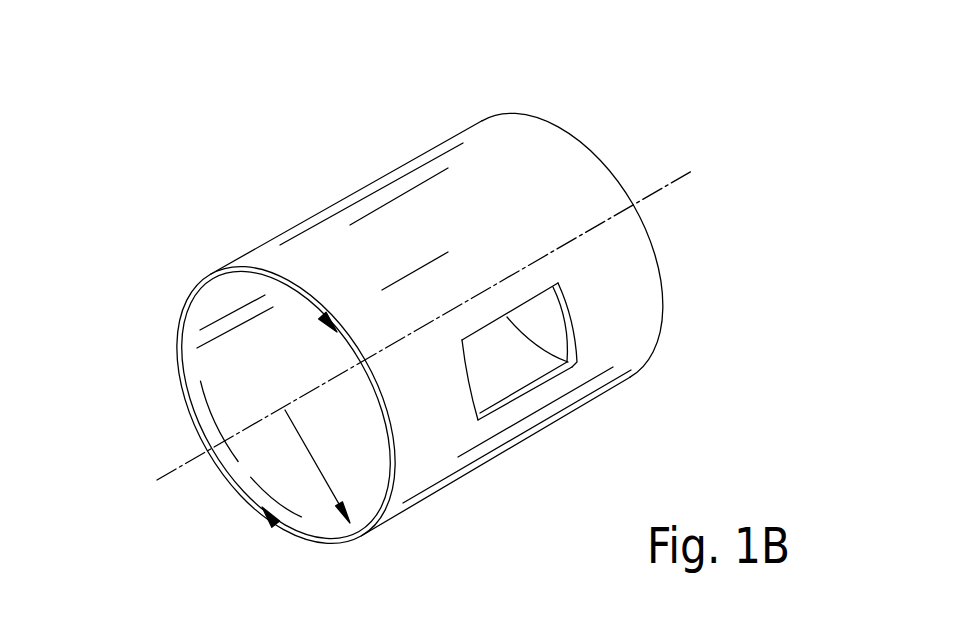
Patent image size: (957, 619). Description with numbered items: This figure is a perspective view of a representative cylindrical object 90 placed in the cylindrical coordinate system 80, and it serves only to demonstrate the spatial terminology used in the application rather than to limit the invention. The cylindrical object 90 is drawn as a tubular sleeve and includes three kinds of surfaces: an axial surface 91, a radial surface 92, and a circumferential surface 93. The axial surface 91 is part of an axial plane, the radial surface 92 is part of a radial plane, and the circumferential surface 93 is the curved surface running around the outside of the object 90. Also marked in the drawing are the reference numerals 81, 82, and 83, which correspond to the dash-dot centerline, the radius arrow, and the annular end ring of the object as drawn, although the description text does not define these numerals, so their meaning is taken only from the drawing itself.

The cylindrical coordinate system 80 is at (389, 310).
The longitudinal axis 81 is at (169, 476).
The radius of the sleeve 82 is at (323, 472).
The annular end face / ring 83 is at (188, 302).
The cylindrical object 90 is at (529, 249).
The axial surface 91 is at (543, 380).
The radial surface 92 is at (302, 532).
The circumferential surface 93 is at (398, 217).